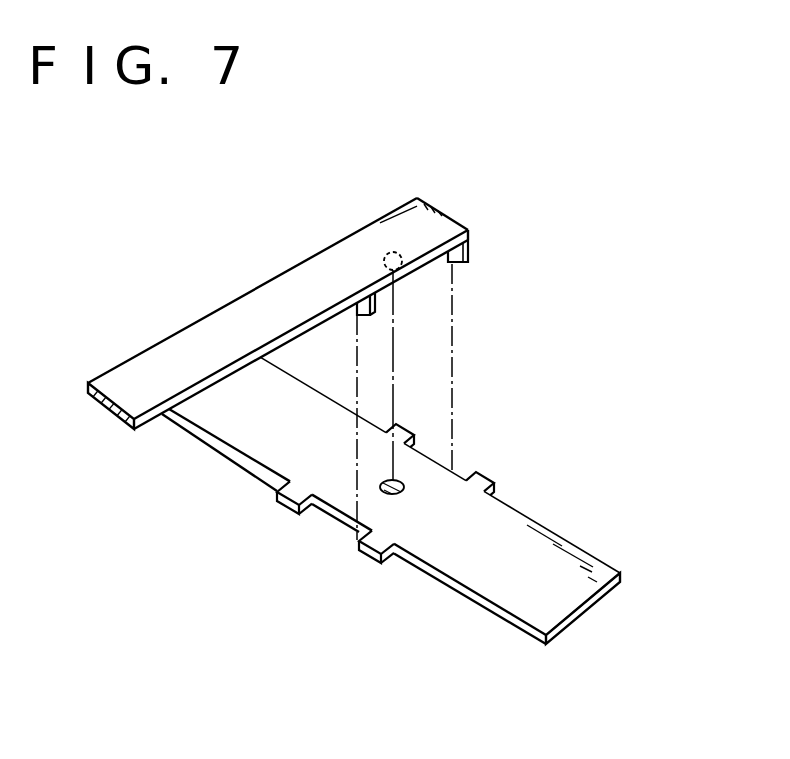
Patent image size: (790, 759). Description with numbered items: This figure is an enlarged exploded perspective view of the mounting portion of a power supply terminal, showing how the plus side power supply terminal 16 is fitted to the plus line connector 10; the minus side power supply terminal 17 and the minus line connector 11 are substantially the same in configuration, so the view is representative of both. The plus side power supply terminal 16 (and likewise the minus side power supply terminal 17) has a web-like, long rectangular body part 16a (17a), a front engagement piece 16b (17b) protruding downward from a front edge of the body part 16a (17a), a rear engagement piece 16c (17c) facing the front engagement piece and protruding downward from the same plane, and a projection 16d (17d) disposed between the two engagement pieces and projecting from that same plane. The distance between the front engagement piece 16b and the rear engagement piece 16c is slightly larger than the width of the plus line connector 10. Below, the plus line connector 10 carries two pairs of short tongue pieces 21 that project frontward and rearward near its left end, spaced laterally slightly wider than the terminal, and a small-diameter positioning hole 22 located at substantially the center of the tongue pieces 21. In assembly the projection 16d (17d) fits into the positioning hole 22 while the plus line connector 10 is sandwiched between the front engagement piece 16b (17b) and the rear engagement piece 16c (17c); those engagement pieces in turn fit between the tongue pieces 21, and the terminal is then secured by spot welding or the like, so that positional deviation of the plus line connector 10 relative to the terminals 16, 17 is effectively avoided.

The plus line connector 10 is at (402, 537).
The minus line connector 11 is at (402, 537).
The plus side power supply terminal 16 is at (409, 374).
The minus side power supply terminal 17 is at (409, 374).
The body part 16a is at (278, 308).
The body part 17a is at (176, 346).
The front engagement piece 16b is at (584, 244).
The front engagement piece 17b is at (470, 251).
The rear engagement piece 16c is at (543, 341).
The rear engagement piece 17c is at (376, 312).
The projection 16d is at (554, 290).
The projection 17d is at (395, 270).
The tongue pieces 21 is at (410, 433).
The positioning hole 22 is at (404, 486).